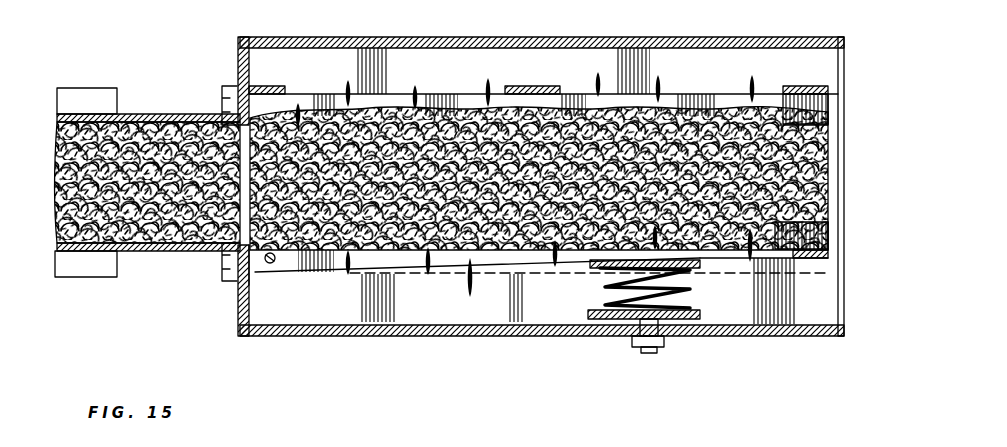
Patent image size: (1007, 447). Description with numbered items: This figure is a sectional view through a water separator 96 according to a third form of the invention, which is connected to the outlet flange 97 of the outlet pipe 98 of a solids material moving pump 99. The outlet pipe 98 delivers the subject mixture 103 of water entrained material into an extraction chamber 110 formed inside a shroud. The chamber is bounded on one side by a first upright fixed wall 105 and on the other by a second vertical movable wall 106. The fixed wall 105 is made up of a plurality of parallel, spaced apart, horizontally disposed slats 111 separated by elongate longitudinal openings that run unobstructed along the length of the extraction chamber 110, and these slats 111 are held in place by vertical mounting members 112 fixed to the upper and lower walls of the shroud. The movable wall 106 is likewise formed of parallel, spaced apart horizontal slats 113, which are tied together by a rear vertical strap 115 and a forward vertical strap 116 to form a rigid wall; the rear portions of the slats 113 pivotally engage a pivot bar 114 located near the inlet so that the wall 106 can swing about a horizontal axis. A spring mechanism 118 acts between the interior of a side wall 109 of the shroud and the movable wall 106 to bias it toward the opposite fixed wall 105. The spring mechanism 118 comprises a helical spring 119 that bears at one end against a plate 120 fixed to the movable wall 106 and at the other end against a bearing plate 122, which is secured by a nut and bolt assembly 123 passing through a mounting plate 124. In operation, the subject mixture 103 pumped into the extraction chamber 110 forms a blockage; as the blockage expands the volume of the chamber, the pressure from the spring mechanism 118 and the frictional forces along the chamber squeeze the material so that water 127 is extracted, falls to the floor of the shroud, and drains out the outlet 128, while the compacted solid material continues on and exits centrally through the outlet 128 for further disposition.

The water separator 96 is at (658, 33).
The outlet flange 97 is at (229, 87).
The outlet pipe 98 is at (180, 114).
The solids material moving pump 99 is at (97, 90).
The subject mixture 103 is at (160, 252).
The first upright fixed wall 105 is at (398, 77).
The second vertical movable wall 106 is at (418, 288).
The side wall of shroud 109 is at (384, 336).
The extraction chamber 110 is at (468, 115).
The slats 111 is at (727, 108).
The vertical mounting members 112 is at (286, 86).
The slats 113 is at (813, 236).
The pivot bar 114 is at (238, 295).
The rear vertical strap 115 is at (285, 283).
The forward vertical strap 116 is at (817, 260).
The spring mechanism 118 is at (713, 303).
The helical spring 119 is at (598, 287).
The plate 120 is at (700, 258).
The bearing plate 122 is at (673, 334).
The nut and bolt assembly 123 is at (633, 347).
The mounting plate 124 is at (597, 312).
The water 127 is at (472, 265).
The outlet 128 is at (815, 75).